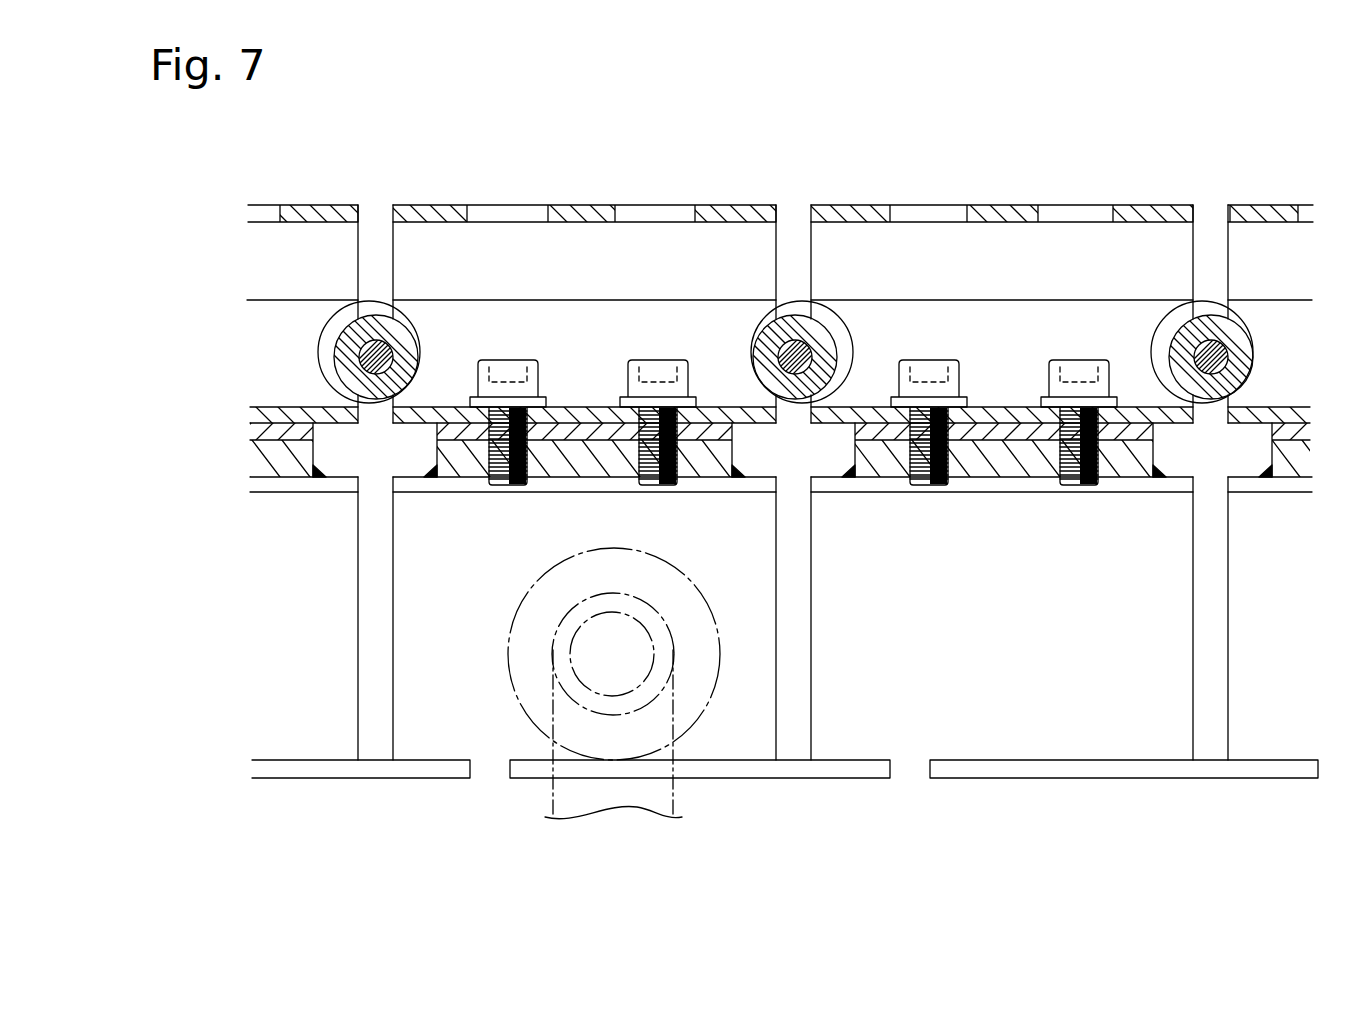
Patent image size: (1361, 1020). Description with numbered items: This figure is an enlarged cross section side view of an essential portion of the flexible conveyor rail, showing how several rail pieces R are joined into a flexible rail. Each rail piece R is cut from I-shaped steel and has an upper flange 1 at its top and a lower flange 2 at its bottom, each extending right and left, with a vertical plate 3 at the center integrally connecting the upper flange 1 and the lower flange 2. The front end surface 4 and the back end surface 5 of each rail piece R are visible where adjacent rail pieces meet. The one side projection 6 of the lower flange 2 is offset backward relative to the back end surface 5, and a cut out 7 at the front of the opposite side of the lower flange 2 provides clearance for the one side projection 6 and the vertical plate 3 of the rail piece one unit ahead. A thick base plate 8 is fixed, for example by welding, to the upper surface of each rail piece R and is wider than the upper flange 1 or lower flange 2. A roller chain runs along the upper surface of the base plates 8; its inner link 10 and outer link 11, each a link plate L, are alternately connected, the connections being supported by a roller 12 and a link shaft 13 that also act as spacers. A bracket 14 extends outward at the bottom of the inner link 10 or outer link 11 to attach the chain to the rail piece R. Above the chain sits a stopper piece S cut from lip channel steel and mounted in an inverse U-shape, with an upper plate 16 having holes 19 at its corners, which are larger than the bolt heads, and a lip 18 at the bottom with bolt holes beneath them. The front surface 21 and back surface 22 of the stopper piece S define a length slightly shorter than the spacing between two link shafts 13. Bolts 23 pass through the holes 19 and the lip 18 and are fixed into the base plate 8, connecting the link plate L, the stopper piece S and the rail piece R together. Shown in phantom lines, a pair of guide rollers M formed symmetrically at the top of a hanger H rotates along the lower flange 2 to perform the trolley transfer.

The upper flange 1 is at (432, 483).
The lower flange 2 is at (705, 770).
The vertical plate 3 is at (870, 693).
The front end surface 4 is at (393, 563).
The back end surface 5 is at (356, 541).
The one side projection 6 is at (435, 770).
The cut out 7 is at (492, 772).
The base plate 8 is at (1015, 538).
The inner link 10 is at (477, 300).
The outer link 11 is at (1083, 300).
The roller 12 is at (343, 337).
The link shaft 13 is at (350, 367).
The bracket 14 is at (582, 432).
The upper plate 16 is at (604, 205).
The lip 18 is at (578, 423).
The holes 19 is at (500, 207).
The front surface 21 is at (392, 228).
The back surface 22 is at (777, 238).
The bolts 23 is at (515, 372).
The stopper piece S is at (573, 205).
The link plate L is at (683, 300).
The guide roller M is at (528, 597).
The hanger H is at (587, 787).
The rail piece R is at (293, 713).